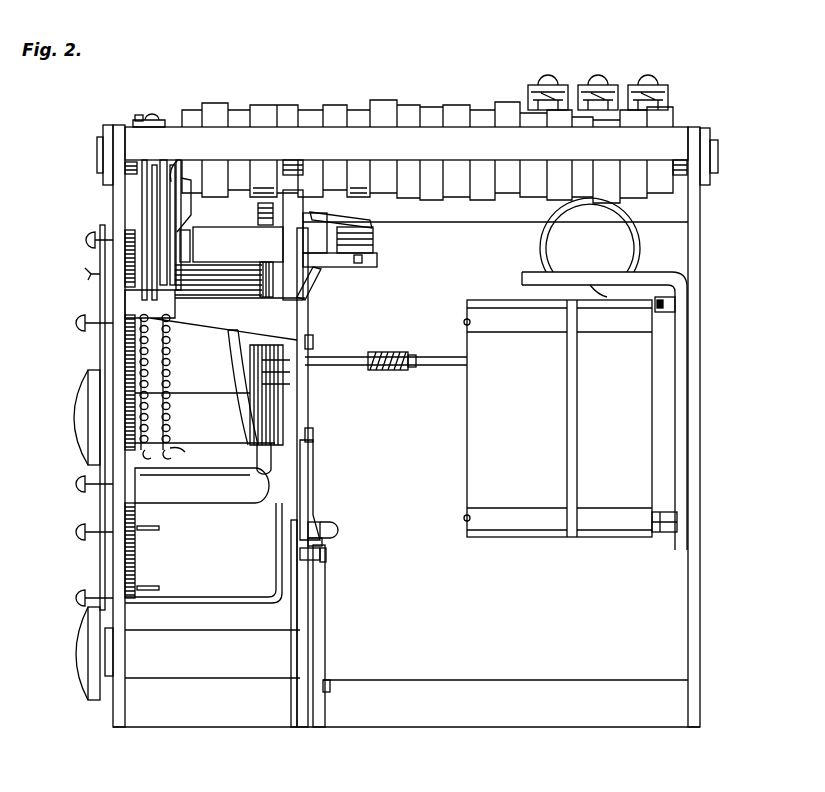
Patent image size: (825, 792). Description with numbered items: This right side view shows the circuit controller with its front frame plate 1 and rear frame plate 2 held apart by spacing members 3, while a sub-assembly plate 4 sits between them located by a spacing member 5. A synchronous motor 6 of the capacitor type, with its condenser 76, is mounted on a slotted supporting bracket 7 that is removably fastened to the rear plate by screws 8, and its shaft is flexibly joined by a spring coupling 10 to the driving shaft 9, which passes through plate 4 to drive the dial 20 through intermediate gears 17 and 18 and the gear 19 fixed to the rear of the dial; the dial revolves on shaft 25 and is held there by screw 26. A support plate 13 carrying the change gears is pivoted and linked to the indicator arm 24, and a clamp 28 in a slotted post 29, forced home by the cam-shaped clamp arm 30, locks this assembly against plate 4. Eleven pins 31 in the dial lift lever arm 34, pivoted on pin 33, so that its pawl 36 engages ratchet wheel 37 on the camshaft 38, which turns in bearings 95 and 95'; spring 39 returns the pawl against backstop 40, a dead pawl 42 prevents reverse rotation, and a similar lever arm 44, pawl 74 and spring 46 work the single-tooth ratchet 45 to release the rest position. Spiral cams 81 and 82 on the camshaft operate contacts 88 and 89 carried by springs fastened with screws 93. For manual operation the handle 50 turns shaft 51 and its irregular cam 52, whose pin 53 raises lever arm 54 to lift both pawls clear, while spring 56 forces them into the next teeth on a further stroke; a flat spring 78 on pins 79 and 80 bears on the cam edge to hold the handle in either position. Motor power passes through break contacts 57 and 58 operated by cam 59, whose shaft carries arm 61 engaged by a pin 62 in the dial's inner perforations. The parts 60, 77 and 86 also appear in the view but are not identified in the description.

The front frame plate 1 is at (113, 712).
The rear frame plate 2 is at (700, 222).
The spacing members 3 is at (676, 127).
The sub-assembly plate 4 is at (282, 520).
The spacing member 5 is at (215, 504).
The motor 6 is at (467, 425).
The supporting bracket 7 is at (680, 272).
The screws 8 is at (662, 298).
The driving shaft 9 is at (355, 366).
The spring coupling 10 is at (392, 371).
The support plate 13 is at (304, 286).
The step gear 17 is at (258, 212).
The gear 18 is at (220, 268).
The gear 19 is at (136, 556).
The dial 20 is at (95, 540).
The indicator arm 24 is at (182, 603).
The shaft 25 is at (172, 398).
The screw 26 is at (82, 490).
The clamp 28 is at (262, 298).
The slotted post 29 is at (240, 345).
The clamp arm 30 is at (240, 362).
The keys or pins 31 is at (85, 242).
The pin 33 is at (184, 200).
The lever arm 34 is at (142, 196).
The pawl 36 is at (152, 185).
The ratchet wheel 37 is at (140, 115).
The camshaft 38 is at (679, 176).
The spring 39 is at (172, 456).
The backstop 40 is at (175, 310).
The dead pawl 42 is at (174, 124).
The lever arm 44 is at (173, 166).
The ratchet wheel 45 is at (159, 103).
The spring 46 is at (152, 348).
The manual control handle 50 is at (88, 698).
The shaft 51 is at (170, 633).
The cam 52 is at (296, 728).
The pin 53 is at (330, 683).
The lever arm 54 is at (310, 478).
The spring 56 is at (282, 372).
The break contact 57 is at (374, 237).
The break contact 58 is at (371, 220).
The cam 59 is at (312, 283).
The bracket 60 is at (305, 212).
The arm 61 is at (256, 191).
The pin 62 is at (86, 276).
The pawl 74 is at (160, 208).
The condenser 76 is at (542, 240).
The stud 77 is at (313, 340).
The flat spring 78 is at (323, 543).
The pin 79 is at (331, 529).
The pin 80 is at (327, 558).
The spiral cam 81 is at (523, 197).
The spiral cam 82 is at (548, 198).
The bar 86 is at (378, 260).
The cam operated contact 88 is at (536, 88).
The cam operated contact 89 is at (530, 100).
The screws 93 is at (600, 78).
The bearing 95 is at (81, 155).
The bearing 95' is at (727, 156).